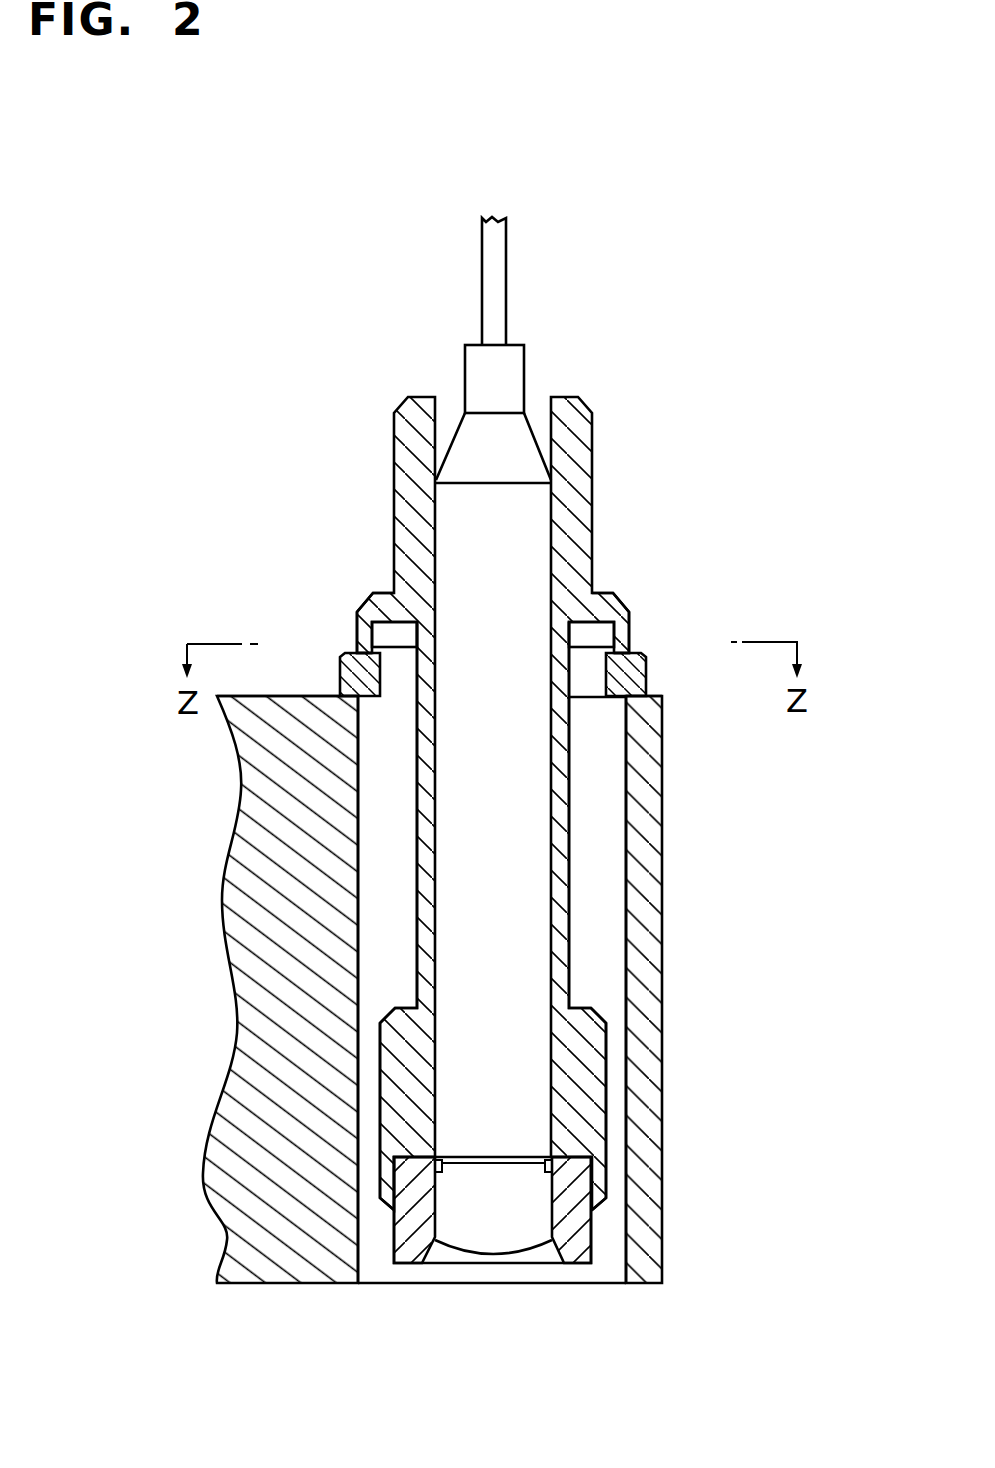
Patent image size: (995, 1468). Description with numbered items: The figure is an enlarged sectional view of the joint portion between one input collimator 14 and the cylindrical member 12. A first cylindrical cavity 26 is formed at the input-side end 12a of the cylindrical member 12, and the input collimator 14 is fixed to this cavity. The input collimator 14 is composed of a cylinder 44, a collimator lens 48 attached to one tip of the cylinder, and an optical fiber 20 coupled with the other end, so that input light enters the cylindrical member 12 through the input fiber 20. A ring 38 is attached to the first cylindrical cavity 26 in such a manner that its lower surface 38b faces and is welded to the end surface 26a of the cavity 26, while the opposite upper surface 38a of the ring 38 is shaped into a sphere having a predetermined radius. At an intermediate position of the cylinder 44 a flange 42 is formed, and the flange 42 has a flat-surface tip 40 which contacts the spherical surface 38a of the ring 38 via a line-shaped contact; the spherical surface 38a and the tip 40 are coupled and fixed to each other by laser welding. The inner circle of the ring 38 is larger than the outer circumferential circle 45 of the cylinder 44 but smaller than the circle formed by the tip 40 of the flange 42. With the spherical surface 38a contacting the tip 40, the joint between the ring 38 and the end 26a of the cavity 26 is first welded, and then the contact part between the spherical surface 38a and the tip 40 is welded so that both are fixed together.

The cylindrical member 12 is at (660, 1005).
The input-side end 12a is at (247, 693).
The input collimator 14 is at (565, 740).
The first input fiber 20 is at (507, 262).
The first cylindrical cavity 26 is at (605, 930).
The end surface of the first cylindrical cavity 26a is at (665, 717).
The ring 38 is at (564, 695).
The upper surface of the ring 38a is at (648, 645).
The lower surface of the ring 38b is at (613, 697).
The flat-surface tip 40 is at (638, 642).
The flange 42 is at (620, 598).
The cylinder 44 is at (592, 472).
The outer circumferential circle 45 is at (575, 843).
The collimator lens 48 is at (530, 1206).